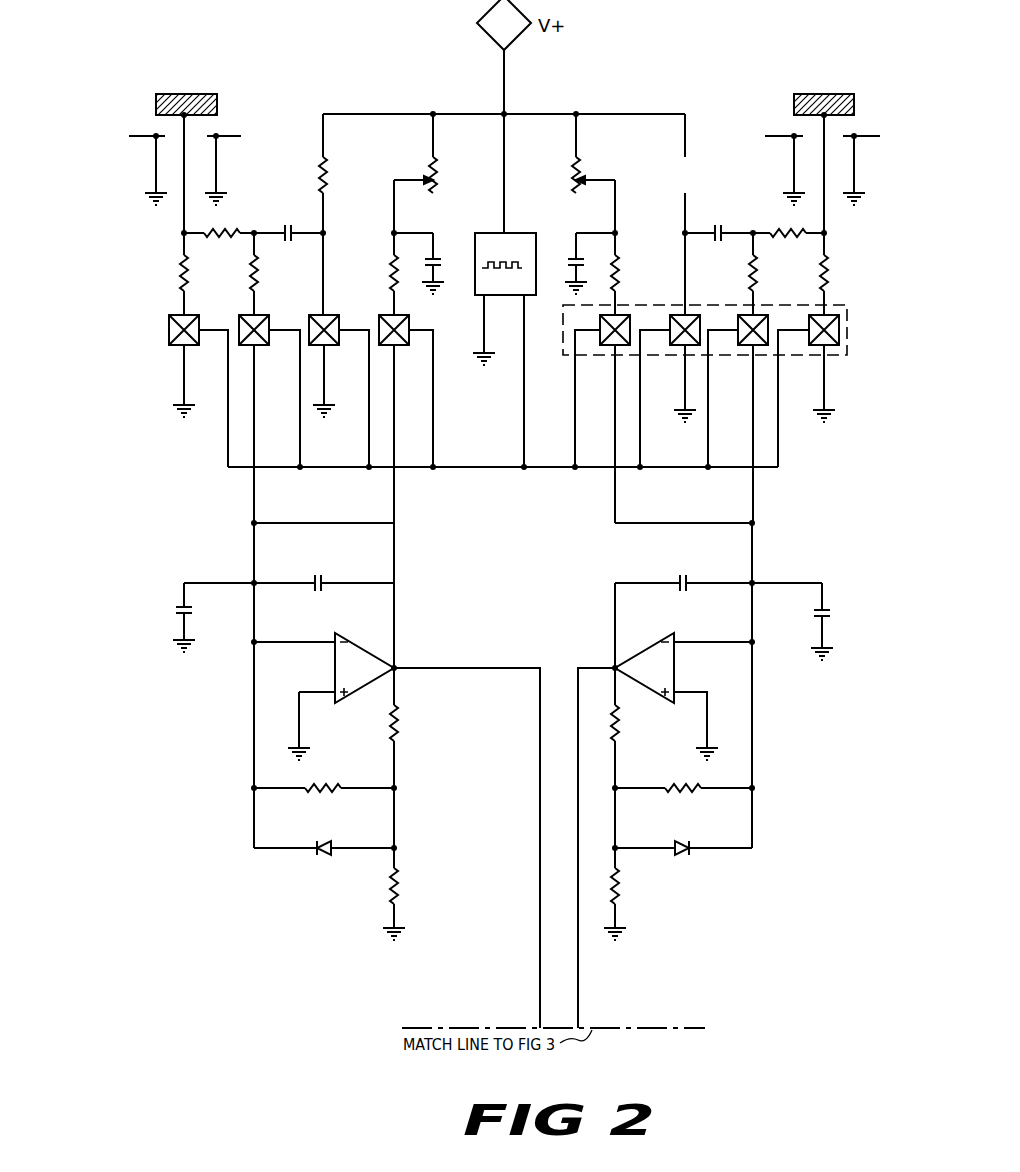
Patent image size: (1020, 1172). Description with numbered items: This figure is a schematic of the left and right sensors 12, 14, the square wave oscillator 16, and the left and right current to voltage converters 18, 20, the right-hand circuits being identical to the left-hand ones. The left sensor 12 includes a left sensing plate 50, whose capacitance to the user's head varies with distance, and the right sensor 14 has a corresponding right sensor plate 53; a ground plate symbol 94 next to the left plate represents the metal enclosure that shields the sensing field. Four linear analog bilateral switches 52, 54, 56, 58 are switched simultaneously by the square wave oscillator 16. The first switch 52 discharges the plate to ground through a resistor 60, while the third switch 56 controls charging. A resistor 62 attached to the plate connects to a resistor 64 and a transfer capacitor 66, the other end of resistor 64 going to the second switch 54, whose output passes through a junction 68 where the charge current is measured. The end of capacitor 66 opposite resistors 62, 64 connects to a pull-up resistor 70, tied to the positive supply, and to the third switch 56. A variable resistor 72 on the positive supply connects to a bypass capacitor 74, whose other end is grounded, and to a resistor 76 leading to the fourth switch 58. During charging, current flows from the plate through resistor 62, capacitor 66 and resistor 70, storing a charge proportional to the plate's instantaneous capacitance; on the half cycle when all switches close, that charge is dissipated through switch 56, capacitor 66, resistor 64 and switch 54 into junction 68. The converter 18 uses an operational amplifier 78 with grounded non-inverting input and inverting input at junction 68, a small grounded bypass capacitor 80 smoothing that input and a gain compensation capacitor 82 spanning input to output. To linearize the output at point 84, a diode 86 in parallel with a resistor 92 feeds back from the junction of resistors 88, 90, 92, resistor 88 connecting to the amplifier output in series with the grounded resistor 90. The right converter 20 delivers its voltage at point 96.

The left sensor 12 is at (276, 82).
The right sensor 14 is at (757, 89).
The square wave oscillator 16 is at (514, 233).
The left current to voltage converter 18 is at (420, 584).
The right current to voltage converter 20 is at (590, 576).
The left sensing plate 50 is at (197, 93).
The right sensor plate 53 is at (807, 93).
The first switch 52 is at (192, 322).
The second switch 54 is at (262, 322).
The third switch 56 is at (331, 321).
The fourth switch 58 is at (401, 321).
The resistor 60 is at (189, 279).
The isolation resistor 62 is at (226, 231).
The resistor 64 is at (259, 279).
The transfer capacitor 66 is at (288, 224).
The junction 68 is at (250, 526).
The pull-up resistor 70 is at (332, 169).
The variable resistor 72 is at (440, 182).
The bypass capacitor 74 is at (440, 270).
The resistor 76 is at (389, 280).
The operational amplifier 78 is at (348, 641).
The bypass capacitor 80 is at (195, 610).
The gain compensation capacitor 82 is at (320, 578).
The point 84 is at (462, 665).
The diode 86 is at (314, 843).
The resistor 88 is at (400, 733).
The resistor 90 is at (400, 888).
The resistor 92 is at (325, 785).
The ground plate symbol 94 is at (147, 134).
The point 96 is at (590, 666).